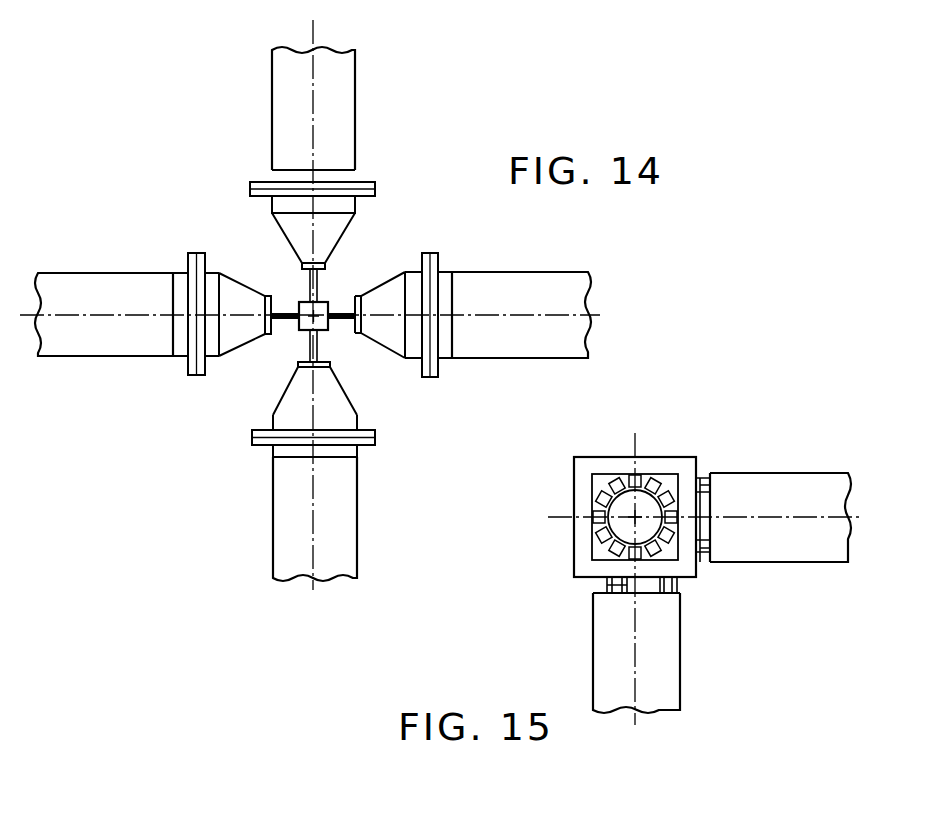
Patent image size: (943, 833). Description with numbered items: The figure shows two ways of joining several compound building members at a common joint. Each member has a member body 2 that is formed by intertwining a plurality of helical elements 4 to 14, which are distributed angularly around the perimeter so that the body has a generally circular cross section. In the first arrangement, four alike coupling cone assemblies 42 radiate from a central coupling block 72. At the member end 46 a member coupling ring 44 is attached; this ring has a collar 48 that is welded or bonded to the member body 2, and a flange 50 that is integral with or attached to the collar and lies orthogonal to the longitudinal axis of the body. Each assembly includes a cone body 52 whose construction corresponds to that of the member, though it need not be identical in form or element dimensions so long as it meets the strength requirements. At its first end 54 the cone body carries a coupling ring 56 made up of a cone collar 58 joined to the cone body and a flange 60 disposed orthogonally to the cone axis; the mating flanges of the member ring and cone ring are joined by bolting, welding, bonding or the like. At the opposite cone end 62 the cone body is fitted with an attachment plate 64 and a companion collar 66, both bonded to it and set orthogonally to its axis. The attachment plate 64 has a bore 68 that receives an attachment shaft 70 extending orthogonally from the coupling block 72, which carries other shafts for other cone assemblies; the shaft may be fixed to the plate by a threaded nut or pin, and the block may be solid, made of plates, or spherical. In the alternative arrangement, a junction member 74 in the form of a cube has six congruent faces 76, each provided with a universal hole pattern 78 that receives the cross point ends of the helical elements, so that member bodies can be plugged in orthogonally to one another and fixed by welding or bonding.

In FIG. 14, the member body 2 is at (355, 128).
In FIG. 15, the member body 2 is at (820, 563).
In FIG. 15, the element 4 is at (701, 478).
In FIG. 15, the element 10 is at (708, 489).
In FIG. 15, the element 14 is at (705, 552).
In FIG. 14, the coupling cone assembly 42 is at (231, 270).
In FIG. 14, the member coupling ring 44 is at (188, 370).
In FIG. 14, the member end 46 is at (130, 272).
In FIG. 14, the collar 48 is at (176, 276).
In FIG. 14, the flange 50 is at (184, 268).
In FIG. 14, the cone body 52 is at (254, 339).
In FIG. 14, the first end 54 is at (216, 360).
In FIG. 14, the coupling ring 56 is at (205, 374).
In FIG. 14, the cone collar 58 is at (195, 252).
In FIG. 14, the flange 60 is at (197, 377).
In FIG. 14, the cone end 62 is at (270, 295).
In FIG. 14, the attachment plate 64 is at (277, 310).
In FIG. 14, the companion collar 66 is at (266, 333).
In FIG. 14, the bore 68 is at (283, 326).
In FIG. 14, the attachment shaft 70 is at (291, 322).
In FIG. 14, the coupling block 72 is at (326, 303).
In FIG. 15, the junction member 74 is at (573, 518).
In FIG. 15, the faces 76 is at (580, 477).
In FIG. 15, the universal hole pattern 78 is at (670, 476).